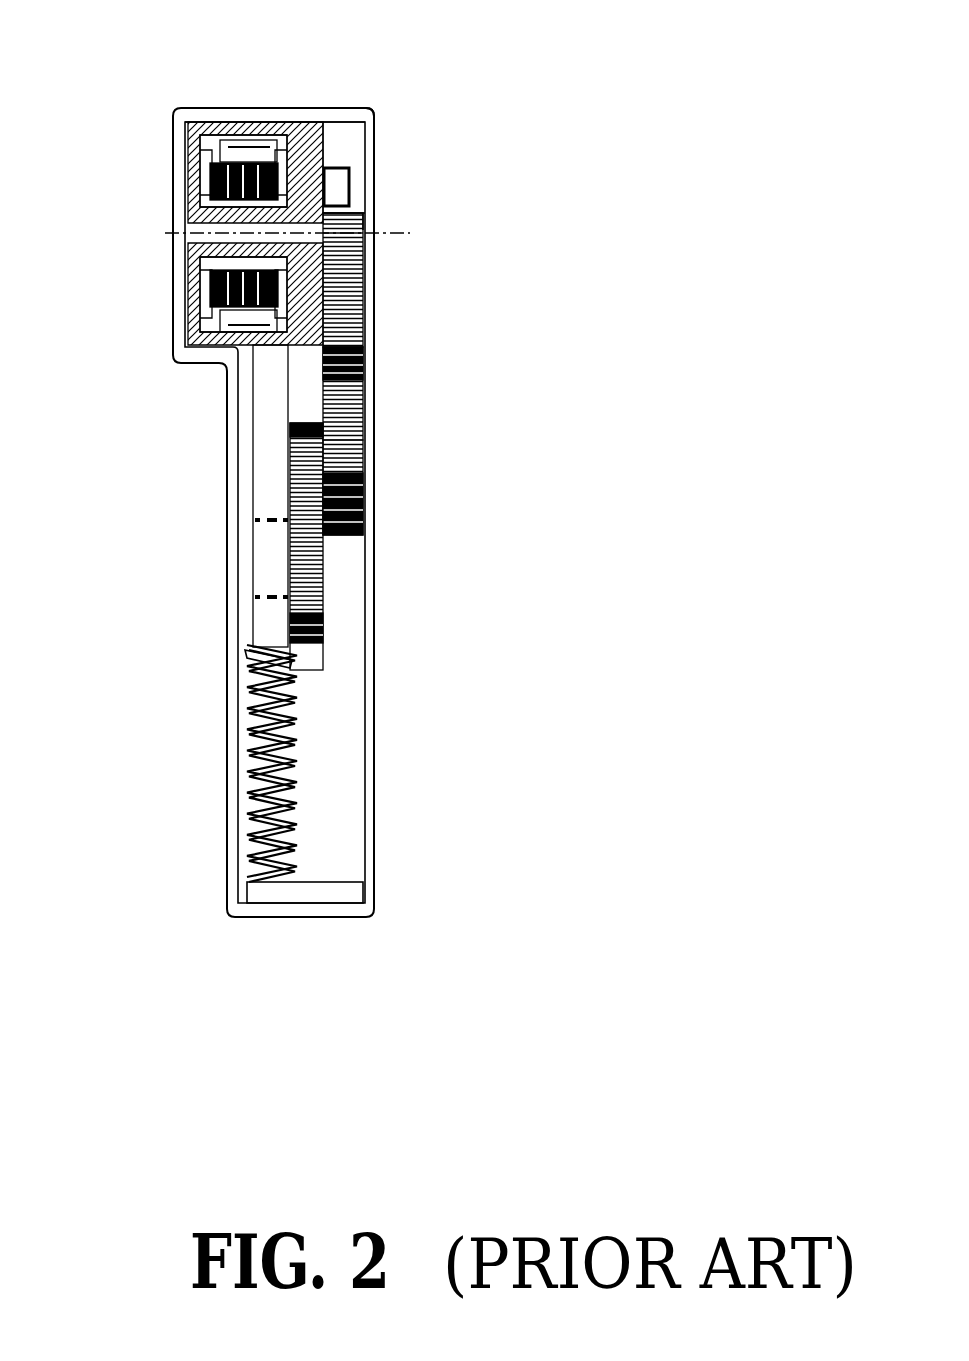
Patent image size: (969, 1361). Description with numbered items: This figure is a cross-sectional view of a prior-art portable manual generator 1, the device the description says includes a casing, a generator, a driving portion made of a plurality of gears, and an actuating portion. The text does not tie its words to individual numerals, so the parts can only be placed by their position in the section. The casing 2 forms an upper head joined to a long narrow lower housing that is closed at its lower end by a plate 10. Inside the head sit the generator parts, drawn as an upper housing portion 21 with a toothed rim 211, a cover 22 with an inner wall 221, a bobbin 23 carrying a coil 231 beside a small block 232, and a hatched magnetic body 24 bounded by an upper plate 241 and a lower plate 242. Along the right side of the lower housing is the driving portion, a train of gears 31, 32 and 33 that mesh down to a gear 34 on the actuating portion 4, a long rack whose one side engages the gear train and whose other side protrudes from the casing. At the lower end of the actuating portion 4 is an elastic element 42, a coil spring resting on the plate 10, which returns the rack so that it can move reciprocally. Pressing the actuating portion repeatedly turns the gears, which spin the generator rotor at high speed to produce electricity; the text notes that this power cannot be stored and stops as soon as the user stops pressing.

The prior art stapler/driving device 1 is at (193, 612).
The housing head 2 is at (175, 355).
The bottom plate 10 is at (353, 892).
The gear chamber 21 is at (368, 200).
The ratchet teeth 211 is at (352, 213).
The top cover 22 is at (340, 107).
The inner top wall 221 is at (283, 110).
The bobbin 23 is at (207, 113).
The coil 231 is at (173, 110).
The stop block 232 is at (343, 163).
The magnetic body 24 is at (232, 113).
The upper core plate 241 is at (190, 157).
The lower core plate 242 is at (253, 113).
The ratchet wheel 31 is at (372, 310).
The large gear 32 is at (360, 393).
The small gear 33 is at (370, 448).
The rack gear 34 is at (327, 572).
The rack 4 is at (253, 478).
The return spring 42 is at (247, 743).